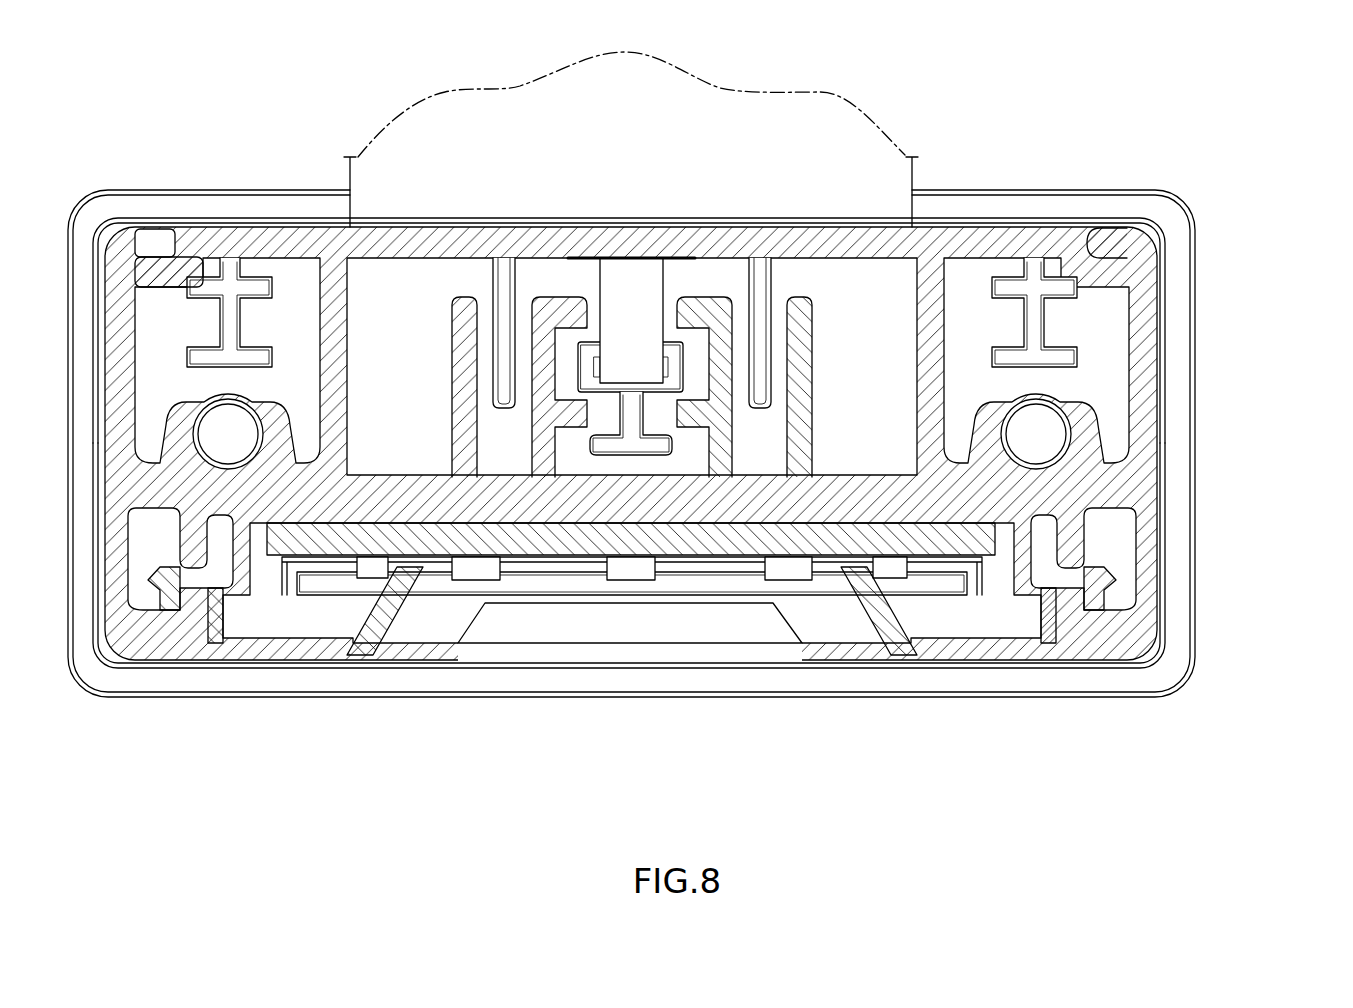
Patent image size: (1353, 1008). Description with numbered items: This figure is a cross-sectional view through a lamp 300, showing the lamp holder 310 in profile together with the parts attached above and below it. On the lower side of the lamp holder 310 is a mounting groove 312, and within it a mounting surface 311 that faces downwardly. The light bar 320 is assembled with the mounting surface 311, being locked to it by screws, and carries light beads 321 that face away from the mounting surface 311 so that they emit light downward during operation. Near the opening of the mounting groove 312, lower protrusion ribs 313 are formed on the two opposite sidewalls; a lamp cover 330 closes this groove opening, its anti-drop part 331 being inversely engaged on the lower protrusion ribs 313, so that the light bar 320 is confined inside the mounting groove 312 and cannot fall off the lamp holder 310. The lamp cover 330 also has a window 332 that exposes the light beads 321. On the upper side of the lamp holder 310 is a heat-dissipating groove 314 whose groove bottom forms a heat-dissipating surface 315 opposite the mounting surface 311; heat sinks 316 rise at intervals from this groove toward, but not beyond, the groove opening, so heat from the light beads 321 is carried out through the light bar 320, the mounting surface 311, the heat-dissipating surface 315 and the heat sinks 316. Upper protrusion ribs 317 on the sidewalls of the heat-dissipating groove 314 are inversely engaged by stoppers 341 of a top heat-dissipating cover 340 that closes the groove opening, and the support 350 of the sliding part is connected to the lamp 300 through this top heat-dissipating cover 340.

The lamp 300 is at (1222, 194).
The lamp holder 310 is at (1112, 464).
The mounting surface 311 is at (238, 641).
The mounting groove 312 is at (348, 528).
The lower protrusion ribs 313 is at (1108, 600).
The heat-dissipating groove 314 is at (1118, 372).
The heat-dissipating surface 315 is at (425, 458).
The heat sinks 316 is at (463, 300).
The upper protrusion ribs 317 is at (1103, 238).
The light bar 320 is at (935, 548).
The light beads 321 is at (633, 572).
The lamp cover 330 is at (200, 672).
The anti-drop part 331 is at (1083, 630).
The window 332 is at (844, 650).
The top heat-dissipating cover 340 is at (1005, 212).
The stoppers 341 is at (1166, 184).
The support 350 is at (850, 131).